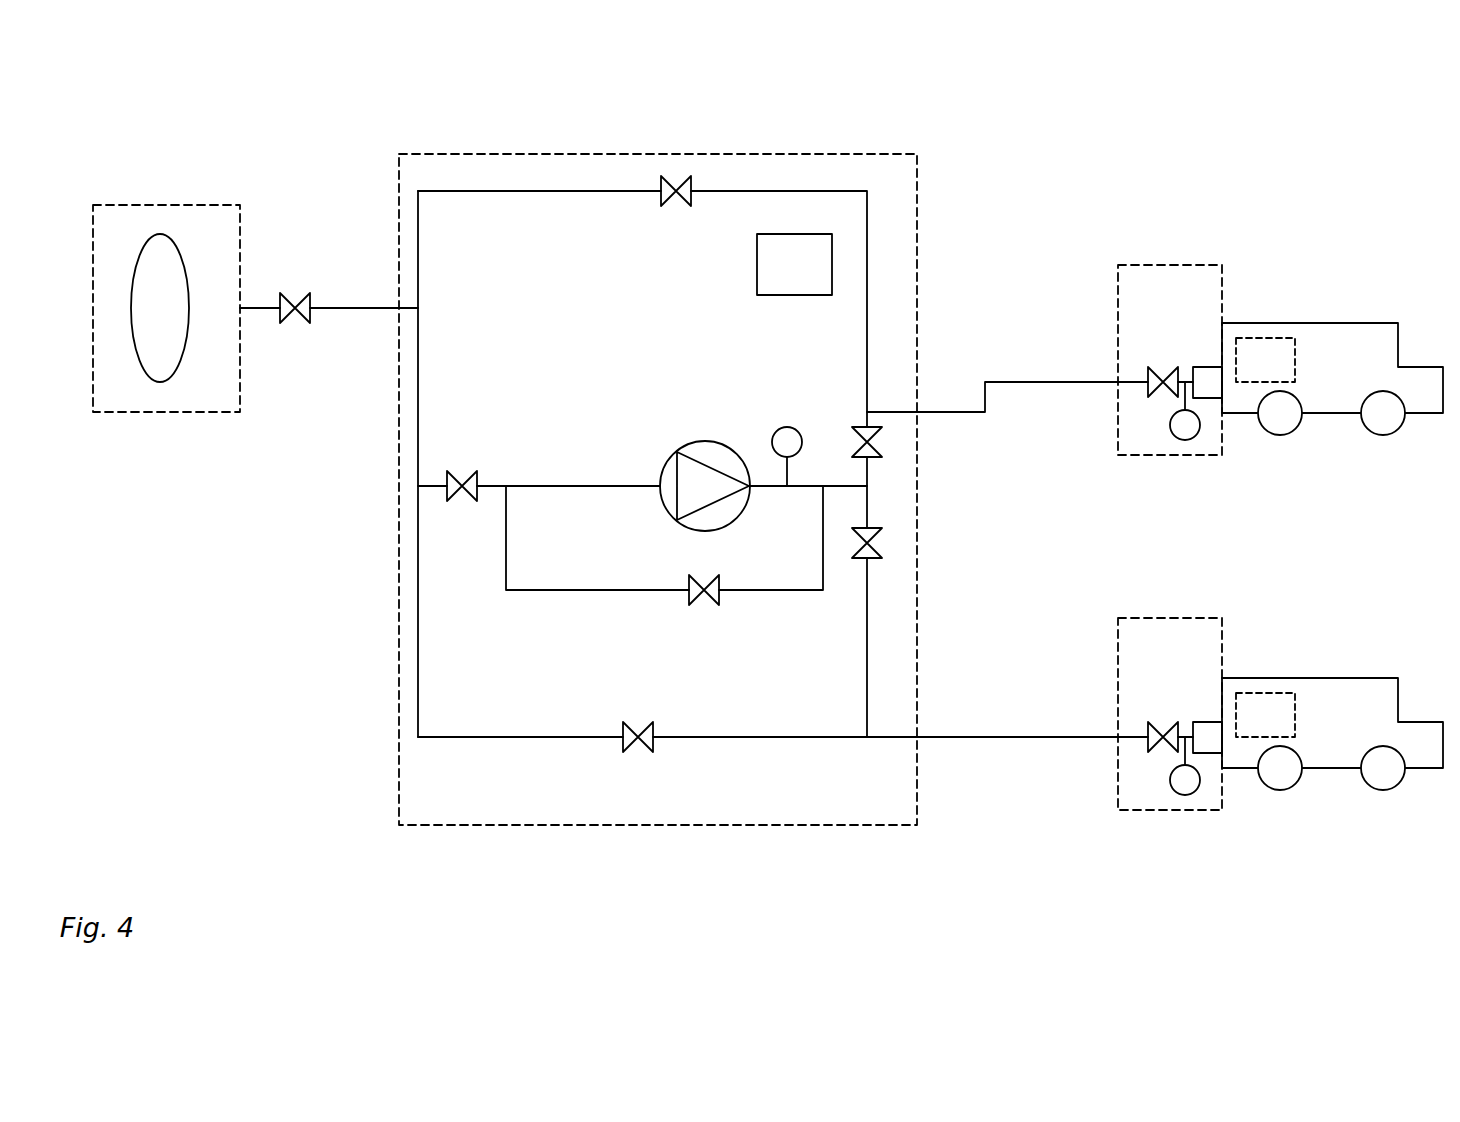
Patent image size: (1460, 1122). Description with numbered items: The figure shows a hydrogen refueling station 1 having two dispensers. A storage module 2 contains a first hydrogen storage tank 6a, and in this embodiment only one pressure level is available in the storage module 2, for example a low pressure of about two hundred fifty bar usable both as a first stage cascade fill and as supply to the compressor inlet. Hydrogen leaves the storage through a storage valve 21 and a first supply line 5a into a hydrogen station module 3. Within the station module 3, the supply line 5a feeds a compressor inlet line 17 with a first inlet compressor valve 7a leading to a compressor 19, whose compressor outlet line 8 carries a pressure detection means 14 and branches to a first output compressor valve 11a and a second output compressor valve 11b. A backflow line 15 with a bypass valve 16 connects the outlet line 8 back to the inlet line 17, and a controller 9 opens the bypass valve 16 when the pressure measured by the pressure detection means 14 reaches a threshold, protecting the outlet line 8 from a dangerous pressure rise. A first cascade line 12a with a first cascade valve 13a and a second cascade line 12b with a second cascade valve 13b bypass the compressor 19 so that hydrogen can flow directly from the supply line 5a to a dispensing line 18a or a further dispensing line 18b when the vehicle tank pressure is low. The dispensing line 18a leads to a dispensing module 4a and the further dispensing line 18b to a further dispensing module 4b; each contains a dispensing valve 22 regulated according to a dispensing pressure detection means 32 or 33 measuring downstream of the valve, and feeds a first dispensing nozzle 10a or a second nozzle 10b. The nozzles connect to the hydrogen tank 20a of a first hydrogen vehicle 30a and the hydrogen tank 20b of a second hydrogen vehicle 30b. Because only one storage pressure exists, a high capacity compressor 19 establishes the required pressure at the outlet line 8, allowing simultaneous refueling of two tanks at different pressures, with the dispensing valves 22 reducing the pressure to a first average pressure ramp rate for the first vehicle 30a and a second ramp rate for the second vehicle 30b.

The hydrogen refueling station 1 is at (214, 91).
The storage module 2 is at (172, 204).
The first hydrogen storage tank 6a is at (143, 325).
The storage valve 21 is at (310, 292).
The first supply line 5a is at (343, 297).
The hydrogen station module 3 is at (478, 827).
The first cascade line 12a is at (838, 190).
The second cascade line 12b is at (750, 739).
The first cascade valve 13a is at (676, 191).
The second cascade valve 13b is at (638, 742).
The controller 9 is at (794, 264).
The first inlet compressor valve 7a is at (475, 471).
The compressor inlet line 17 is at (638, 484).
The compressor outlet line 8 is at (763, 461).
The compressor 19 is at (705, 440).
The pressure detection means 14 is at (785, 427).
The backflow line 15 is at (795, 592).
The bypass valve 16 is at (708, 597).
The first output compressor valve 11a is at (866, 420).
The second output compressor valve 11b is at (882, 546).
The dispensing line 18a is at (1032, 381).
The further dispensing line 18b is at (1032, 736).
The dispensing module 4a is at (1123, 264).
The further dispensing module 4b is at (1123, 619).
The dispensing valve 22 is at (1164, 378).
The first dispensing nozzle 10a is at (1207, 380).
The second nozzle 10b is at (1207, 735).
The dispensing pressure detection means 32 is at (1187, 442).
The dispensing pressure detection means 33 is at (1187, 797).
The hydrogen tank 20a is at (1332, 327).
The hydrogen tank 20b is at (1332, 682).
The first hydrogen vehicle 30a is at (1391, 376).
The second hydrogen vehicle 30b is at (1391, 731).